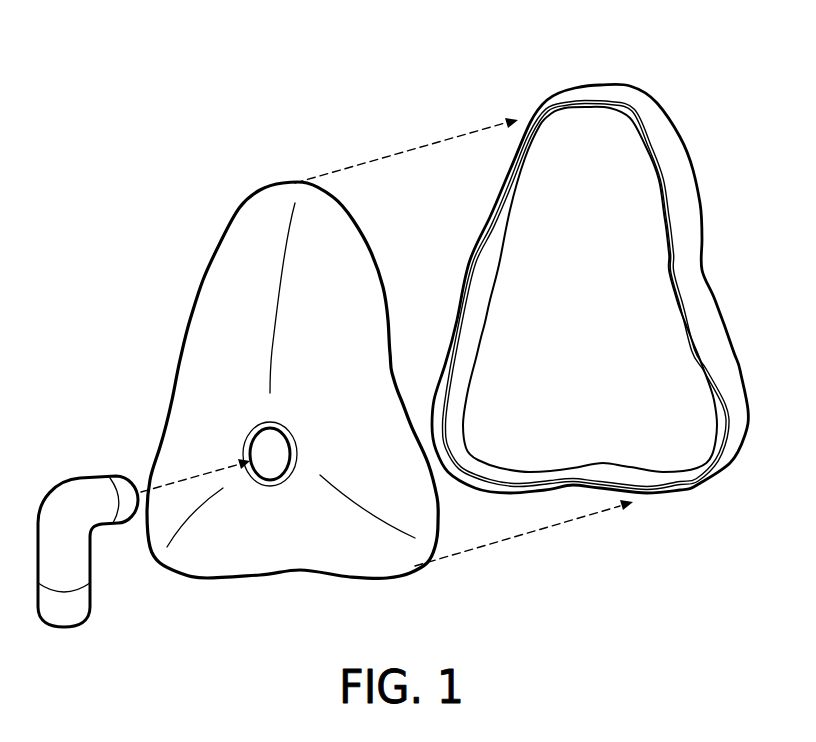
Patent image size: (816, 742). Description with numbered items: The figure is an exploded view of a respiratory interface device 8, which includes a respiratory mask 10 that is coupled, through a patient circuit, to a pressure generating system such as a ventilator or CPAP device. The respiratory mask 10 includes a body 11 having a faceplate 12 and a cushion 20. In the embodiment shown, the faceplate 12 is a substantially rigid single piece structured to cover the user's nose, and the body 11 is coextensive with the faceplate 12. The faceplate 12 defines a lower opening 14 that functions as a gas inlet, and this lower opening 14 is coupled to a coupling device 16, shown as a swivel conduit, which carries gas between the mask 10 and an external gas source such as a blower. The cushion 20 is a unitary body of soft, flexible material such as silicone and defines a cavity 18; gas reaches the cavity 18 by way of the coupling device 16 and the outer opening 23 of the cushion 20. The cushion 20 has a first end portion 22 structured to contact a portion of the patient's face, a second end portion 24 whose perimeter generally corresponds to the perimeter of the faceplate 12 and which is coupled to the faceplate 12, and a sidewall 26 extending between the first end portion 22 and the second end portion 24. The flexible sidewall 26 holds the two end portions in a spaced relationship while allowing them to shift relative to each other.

The respiratory interface device 8 is at (111, 91).
The respiratory mask 10 is at (155, 237).
The body 11 is at (143, 277).
The faceplate 12 is at (267, 218).
The lower opening 14 is at (266, 453).
The coupling device 16 is at (81, 479).
The cavity 18 is at (596, 288).
The cushion 20 is at (657, 132).
The first end portion 22 is at (703, 272).
The outer opening 23 is at (516, 247).
The second end portion 24 is at (680, 321).
The sidewall 26 is at (692, 288).